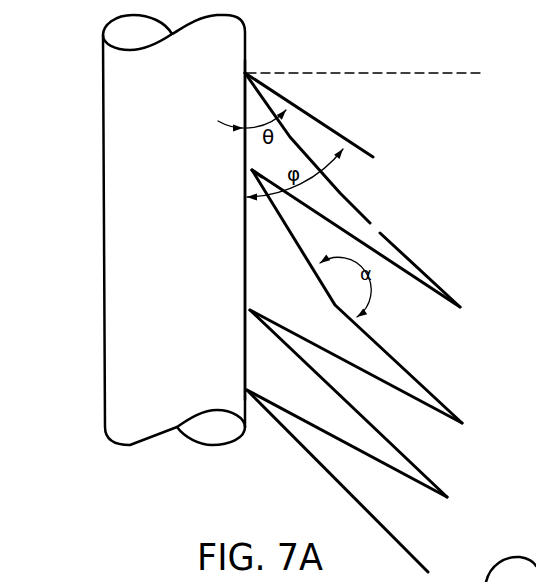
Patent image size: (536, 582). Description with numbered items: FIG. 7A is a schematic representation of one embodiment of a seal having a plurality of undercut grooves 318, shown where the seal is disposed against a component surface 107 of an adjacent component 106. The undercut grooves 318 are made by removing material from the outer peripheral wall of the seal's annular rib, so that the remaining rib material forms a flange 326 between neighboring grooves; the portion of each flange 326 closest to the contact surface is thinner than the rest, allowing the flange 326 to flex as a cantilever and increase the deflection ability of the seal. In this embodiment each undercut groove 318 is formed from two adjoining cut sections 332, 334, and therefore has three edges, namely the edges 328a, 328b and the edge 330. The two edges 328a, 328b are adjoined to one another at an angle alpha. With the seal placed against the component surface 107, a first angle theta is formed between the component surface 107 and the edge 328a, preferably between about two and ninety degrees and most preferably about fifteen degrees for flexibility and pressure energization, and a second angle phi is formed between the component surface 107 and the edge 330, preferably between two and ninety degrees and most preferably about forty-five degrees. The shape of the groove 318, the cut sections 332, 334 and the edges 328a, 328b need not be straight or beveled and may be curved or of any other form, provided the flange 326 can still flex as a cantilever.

The drum 106 is at (105, 350).
The component surface 107 is at (245, 370).
The undercut groove 318 is at (254, 161).
The flange 326 is at (283, 207).
The edge 328a is at (290, 134).
The edge 328b is at (345, 199).
The edge 330 is at (358, 146).
The cut section 332 is at (254, 150).
The cut section 334 is at (350, 225).